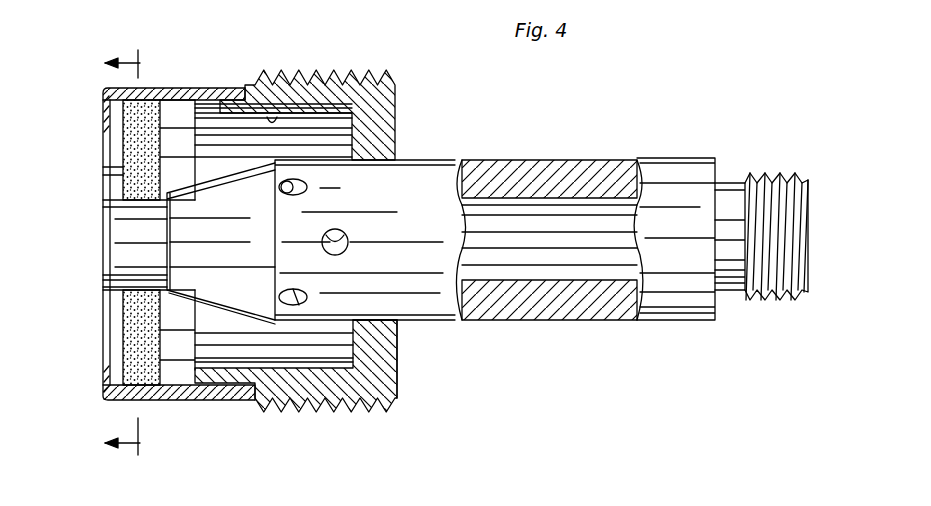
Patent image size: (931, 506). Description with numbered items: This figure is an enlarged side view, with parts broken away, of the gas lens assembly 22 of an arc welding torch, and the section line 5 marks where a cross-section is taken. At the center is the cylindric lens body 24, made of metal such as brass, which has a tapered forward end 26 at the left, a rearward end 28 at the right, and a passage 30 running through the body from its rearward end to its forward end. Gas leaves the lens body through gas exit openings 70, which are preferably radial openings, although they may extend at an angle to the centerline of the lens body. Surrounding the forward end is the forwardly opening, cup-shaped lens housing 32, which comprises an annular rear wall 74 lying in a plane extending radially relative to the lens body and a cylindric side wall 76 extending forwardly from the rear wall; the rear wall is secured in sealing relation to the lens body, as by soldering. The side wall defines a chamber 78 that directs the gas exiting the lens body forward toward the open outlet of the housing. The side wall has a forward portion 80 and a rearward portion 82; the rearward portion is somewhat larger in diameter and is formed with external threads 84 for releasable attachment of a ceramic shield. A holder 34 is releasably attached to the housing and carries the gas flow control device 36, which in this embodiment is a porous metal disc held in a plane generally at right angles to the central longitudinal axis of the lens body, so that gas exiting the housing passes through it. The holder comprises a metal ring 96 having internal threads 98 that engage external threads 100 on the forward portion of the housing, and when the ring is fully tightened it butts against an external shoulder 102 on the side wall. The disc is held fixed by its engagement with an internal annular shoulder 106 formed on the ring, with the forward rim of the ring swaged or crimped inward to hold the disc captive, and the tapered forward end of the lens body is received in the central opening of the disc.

The section line 5- 5 is at (130, 252).
The gas lens assembly 22 is at (488, 119).
The lens body 24 is at (610, 167).
The tapered forward end 26 is at (190, 230).
The rearward end 28 is at (692, 297).
The passage 30 is at (585, 277).
The lens housing 32 is at (397, 400).
The holder 34 is at (168, 108).
The gas flow control device 36 is at (137, 330).
The gas exit openings 70 is at (307, 193).
The annular rear wall 74 is at (387, 362).
The cylindric side wall 76 is at (252, 387).
The chamber 78 is at (282, 117).
The forward portion 80 is at (217, 370).
The rearward portion 82 is at (320, 378).
The external threads 84 is at (290, 410).
The metal ring 96 is at (163, 398).
The internal threads 98 is at (237, 378).
The external threads 100 is at (212, 110).
The external shoulder 102 is at (230, 100).
The internal annular shoulder 106 is at (110, 118).